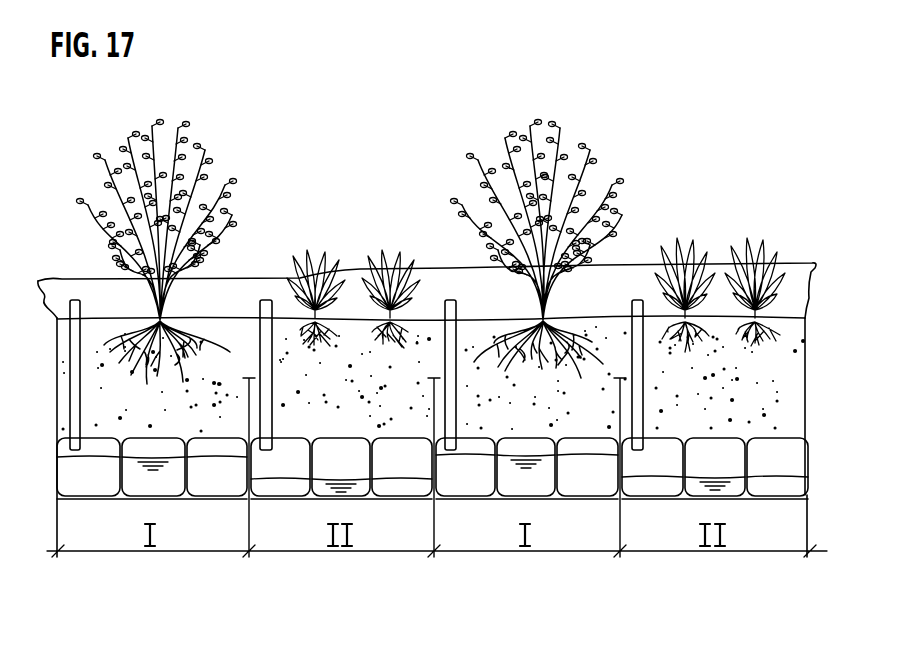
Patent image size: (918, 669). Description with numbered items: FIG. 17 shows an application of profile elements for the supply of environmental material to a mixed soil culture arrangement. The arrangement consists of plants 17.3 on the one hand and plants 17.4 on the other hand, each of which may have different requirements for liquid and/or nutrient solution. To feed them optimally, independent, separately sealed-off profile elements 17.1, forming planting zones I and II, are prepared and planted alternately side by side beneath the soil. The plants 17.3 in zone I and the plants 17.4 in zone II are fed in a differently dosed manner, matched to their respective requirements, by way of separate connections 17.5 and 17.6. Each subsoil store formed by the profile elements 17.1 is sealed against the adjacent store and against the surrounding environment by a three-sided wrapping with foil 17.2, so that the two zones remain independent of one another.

The profile elements 17.1 is at (495, 463).
The foil 17.2 is at (92, 278).
The plants 17.3 is at (500, 178).
The plants 17.4 is at (693, 243).
The connection 17.5 is at (640, 317).
The connection 17.6 is at (447, 310).